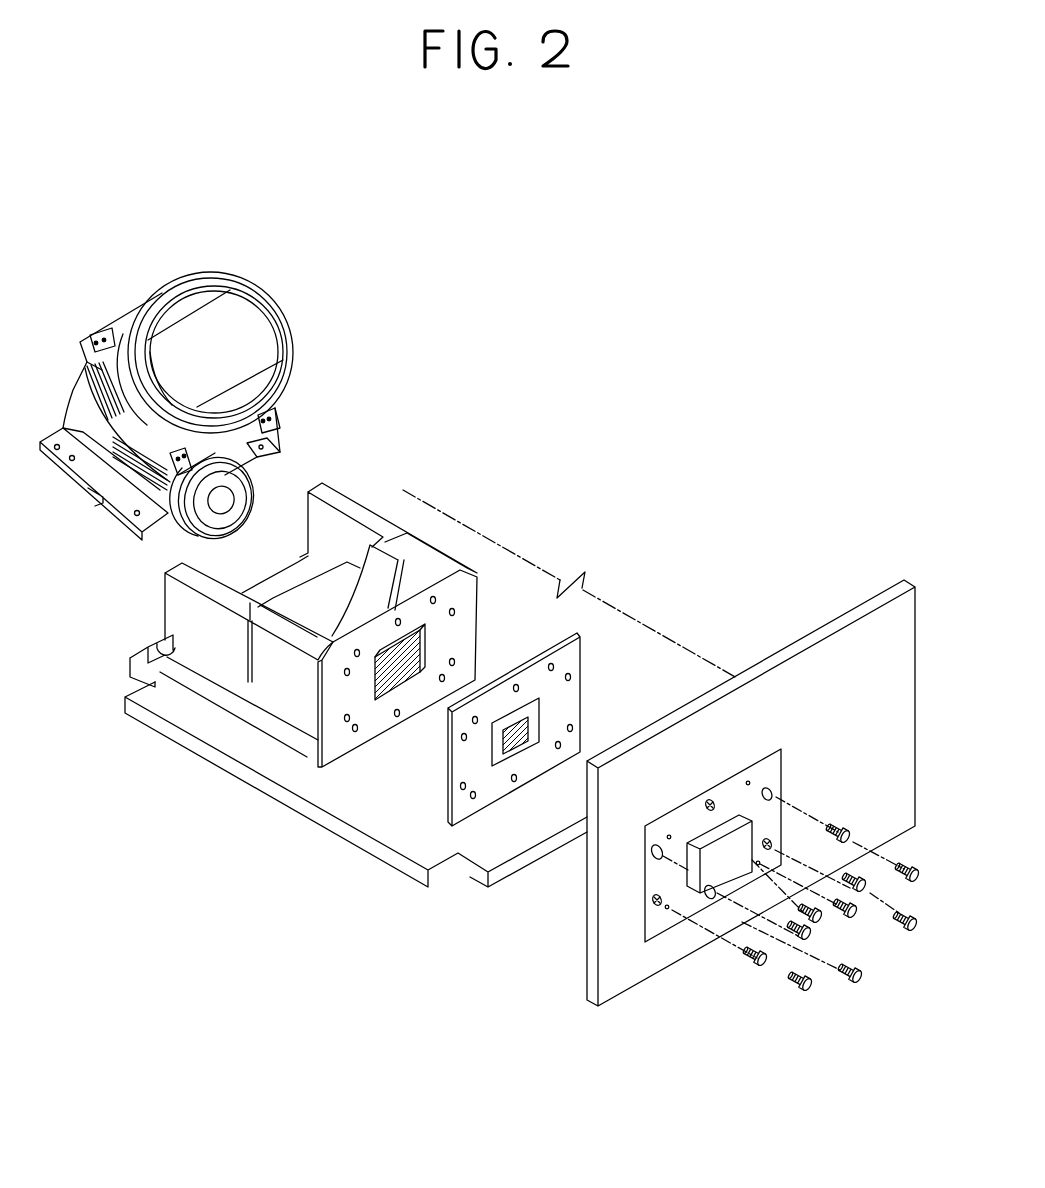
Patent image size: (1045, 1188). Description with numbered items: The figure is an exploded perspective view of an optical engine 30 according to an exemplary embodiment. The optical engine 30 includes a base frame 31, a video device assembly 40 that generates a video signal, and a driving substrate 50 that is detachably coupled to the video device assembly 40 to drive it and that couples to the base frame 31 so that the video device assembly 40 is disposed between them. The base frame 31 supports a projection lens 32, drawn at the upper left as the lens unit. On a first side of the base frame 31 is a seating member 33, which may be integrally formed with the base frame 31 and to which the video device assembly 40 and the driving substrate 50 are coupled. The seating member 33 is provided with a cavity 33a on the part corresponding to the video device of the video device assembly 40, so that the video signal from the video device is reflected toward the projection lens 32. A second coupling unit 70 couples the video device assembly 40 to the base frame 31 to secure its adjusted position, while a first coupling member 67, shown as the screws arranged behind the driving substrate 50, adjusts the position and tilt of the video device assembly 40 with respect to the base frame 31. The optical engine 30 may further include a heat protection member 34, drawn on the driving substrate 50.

The optical engine 30 is at (637, 378).
The base frame 31 is at (223, 638).
The projection lens 32 is at (128, 262).
The seating member 33 is at (328, 698).
The cavity 33a is at (345, 712).
The heat protection member 34 is at (687, 858).
The video device assembly 40 is at (580, 655).
The driving substrate 50 is at (796, 669).
The first coupling member 67 is at (813, 984).
The second coupling unit 70 is at (377, 833).